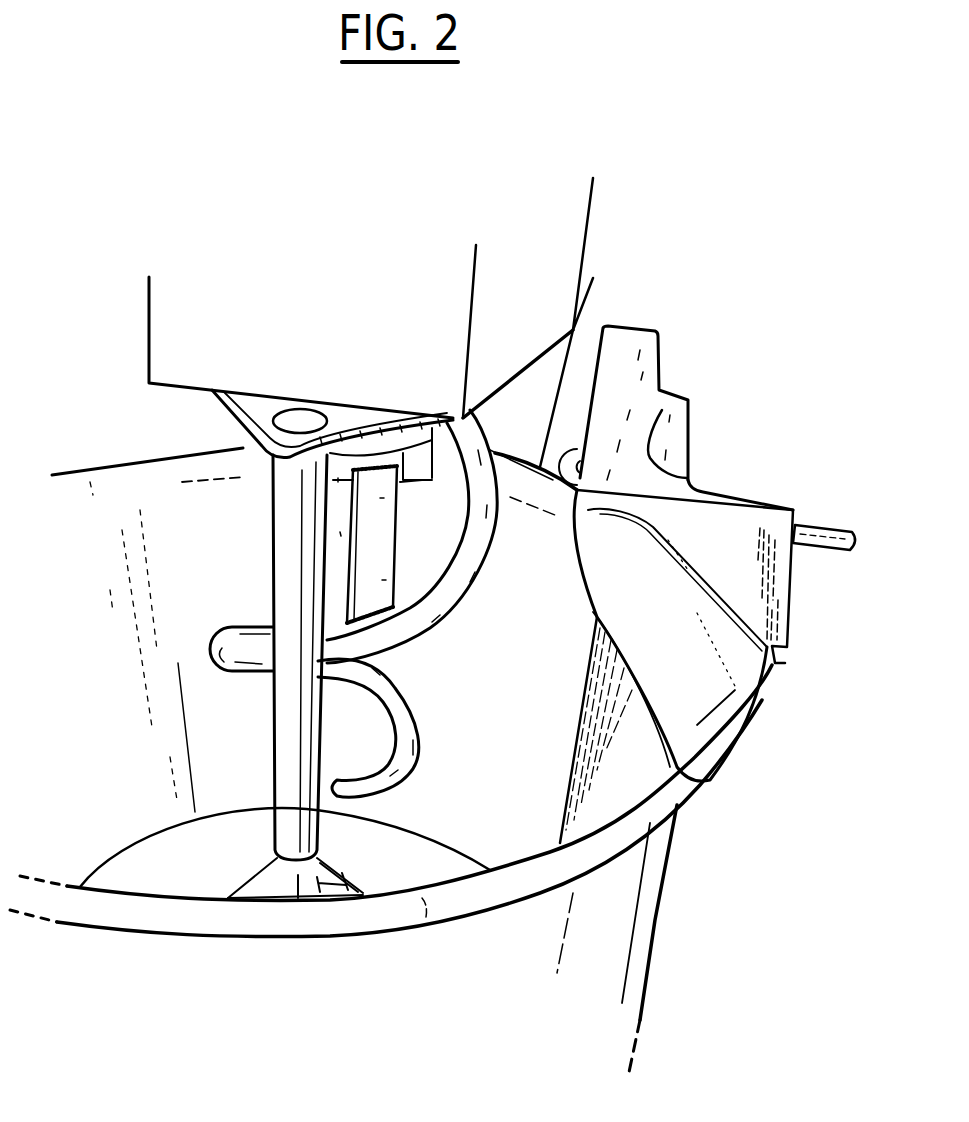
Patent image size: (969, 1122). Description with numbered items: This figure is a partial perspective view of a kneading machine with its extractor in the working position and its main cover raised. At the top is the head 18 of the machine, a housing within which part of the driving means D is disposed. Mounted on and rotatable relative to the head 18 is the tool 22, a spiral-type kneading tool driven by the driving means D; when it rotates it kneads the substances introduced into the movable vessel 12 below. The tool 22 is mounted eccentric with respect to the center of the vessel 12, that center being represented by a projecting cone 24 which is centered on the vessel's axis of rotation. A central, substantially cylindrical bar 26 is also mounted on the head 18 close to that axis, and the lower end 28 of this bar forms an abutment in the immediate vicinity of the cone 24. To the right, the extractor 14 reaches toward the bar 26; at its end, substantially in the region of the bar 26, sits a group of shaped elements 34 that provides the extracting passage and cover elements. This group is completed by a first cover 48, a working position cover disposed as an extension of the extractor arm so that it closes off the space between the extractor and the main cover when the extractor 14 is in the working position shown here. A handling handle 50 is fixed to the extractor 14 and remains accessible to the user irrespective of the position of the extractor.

The movable vessel 12 is at (650, 822).
The extractor 14 is at (652, 403).
The head 18 is at (371, 330).
The tool 22 is at (445, 622).
The projecting cone 24 is at (258, 888).
The central substantially cylindrical bar 26 is at (285, 500).
The lower end 28 is at (309, 848).
The group of shaped elements 34 is at (573, 748).
The first cover 48 is at (742, 718).
The handling handle 50 is at (827, 527).
The driving means D is at (387, 544).